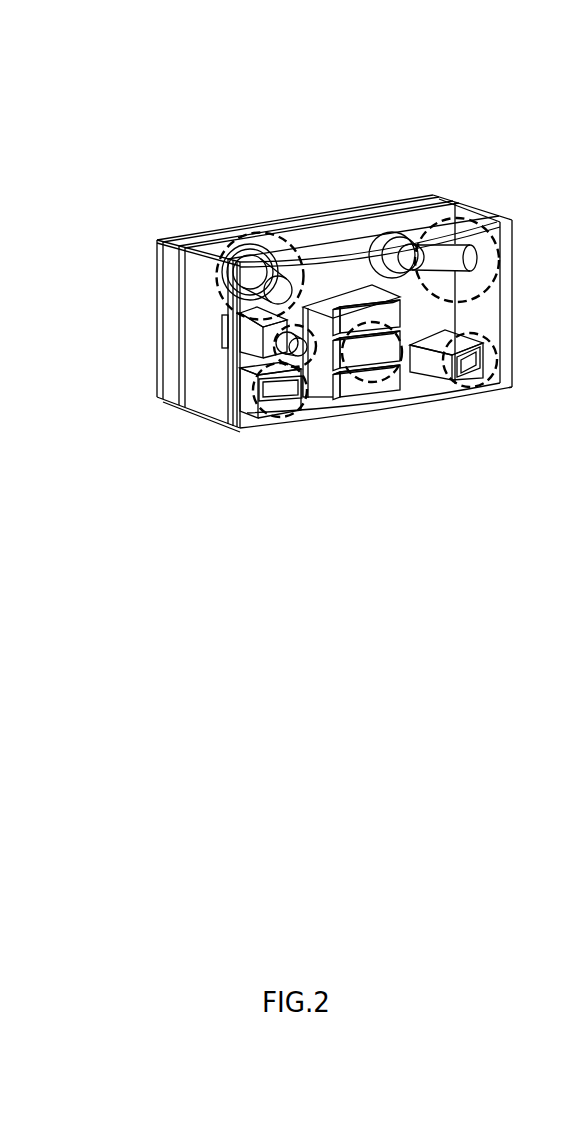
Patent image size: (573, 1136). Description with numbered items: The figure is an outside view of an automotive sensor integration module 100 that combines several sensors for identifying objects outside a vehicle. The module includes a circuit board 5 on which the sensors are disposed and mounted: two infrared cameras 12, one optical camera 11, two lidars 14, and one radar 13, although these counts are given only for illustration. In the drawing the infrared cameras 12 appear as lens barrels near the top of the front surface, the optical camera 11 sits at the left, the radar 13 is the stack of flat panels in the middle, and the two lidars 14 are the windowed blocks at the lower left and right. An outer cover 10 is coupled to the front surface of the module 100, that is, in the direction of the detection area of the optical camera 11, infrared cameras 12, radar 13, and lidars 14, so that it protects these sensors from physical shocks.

The automotive sensor integration module 100 is at (512, 43).
The circuit board 5 is at (193, 242).
The outer cover 10 is at (223, 414).
The optical camera 11 is at (263, 342).
The infrared camera 12 is at (432, 222).
The radar 13 is at (383, 380).
The lidar 14 is at (457, 380).